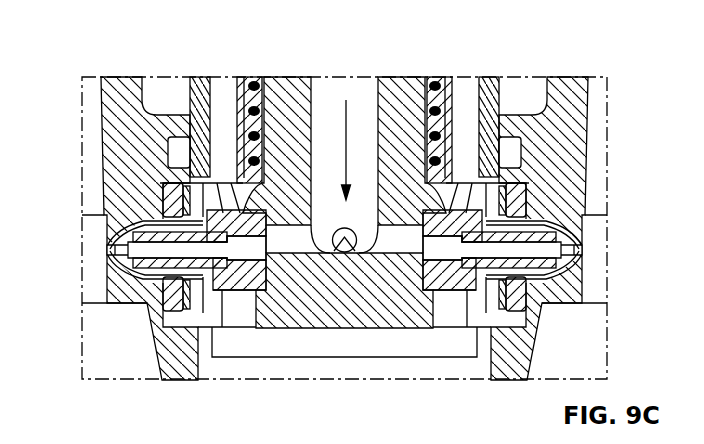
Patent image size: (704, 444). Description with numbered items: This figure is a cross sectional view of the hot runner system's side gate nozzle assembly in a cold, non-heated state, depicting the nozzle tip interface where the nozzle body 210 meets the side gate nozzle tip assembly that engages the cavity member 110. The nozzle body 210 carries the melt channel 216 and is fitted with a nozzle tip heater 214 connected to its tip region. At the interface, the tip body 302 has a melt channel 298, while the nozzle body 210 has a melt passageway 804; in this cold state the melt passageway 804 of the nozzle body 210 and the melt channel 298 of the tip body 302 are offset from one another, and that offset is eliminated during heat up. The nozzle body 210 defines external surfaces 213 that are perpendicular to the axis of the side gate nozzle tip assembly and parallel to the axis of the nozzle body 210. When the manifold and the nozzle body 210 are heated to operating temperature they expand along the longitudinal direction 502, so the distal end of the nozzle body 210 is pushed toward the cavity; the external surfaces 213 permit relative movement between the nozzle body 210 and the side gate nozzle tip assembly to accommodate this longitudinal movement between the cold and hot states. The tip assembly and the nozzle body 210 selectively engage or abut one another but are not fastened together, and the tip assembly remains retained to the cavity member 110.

The cavity member 110 is at (127, 175).
The nozzle body 210 is at (278, 84).
The nozzle tip heater 214 is at (448, 88).
The longitudinal direction 502 is at (342, 117).
The melt channel 216 is at (348, 90).
The tip body 302 is at (560, 234).
The melt channel 298 is at (160, 308).
The melt passageway 804 is at (300, 290).
The external surfaces 213 is at (262, 313).